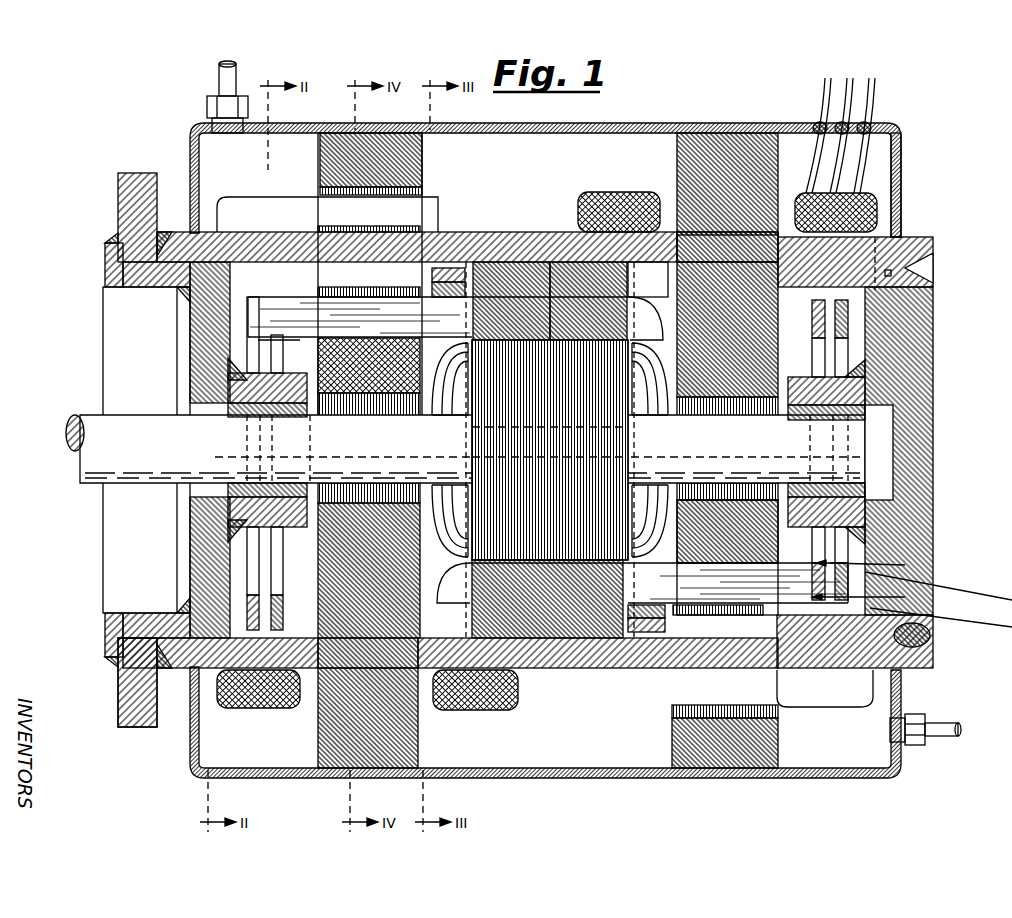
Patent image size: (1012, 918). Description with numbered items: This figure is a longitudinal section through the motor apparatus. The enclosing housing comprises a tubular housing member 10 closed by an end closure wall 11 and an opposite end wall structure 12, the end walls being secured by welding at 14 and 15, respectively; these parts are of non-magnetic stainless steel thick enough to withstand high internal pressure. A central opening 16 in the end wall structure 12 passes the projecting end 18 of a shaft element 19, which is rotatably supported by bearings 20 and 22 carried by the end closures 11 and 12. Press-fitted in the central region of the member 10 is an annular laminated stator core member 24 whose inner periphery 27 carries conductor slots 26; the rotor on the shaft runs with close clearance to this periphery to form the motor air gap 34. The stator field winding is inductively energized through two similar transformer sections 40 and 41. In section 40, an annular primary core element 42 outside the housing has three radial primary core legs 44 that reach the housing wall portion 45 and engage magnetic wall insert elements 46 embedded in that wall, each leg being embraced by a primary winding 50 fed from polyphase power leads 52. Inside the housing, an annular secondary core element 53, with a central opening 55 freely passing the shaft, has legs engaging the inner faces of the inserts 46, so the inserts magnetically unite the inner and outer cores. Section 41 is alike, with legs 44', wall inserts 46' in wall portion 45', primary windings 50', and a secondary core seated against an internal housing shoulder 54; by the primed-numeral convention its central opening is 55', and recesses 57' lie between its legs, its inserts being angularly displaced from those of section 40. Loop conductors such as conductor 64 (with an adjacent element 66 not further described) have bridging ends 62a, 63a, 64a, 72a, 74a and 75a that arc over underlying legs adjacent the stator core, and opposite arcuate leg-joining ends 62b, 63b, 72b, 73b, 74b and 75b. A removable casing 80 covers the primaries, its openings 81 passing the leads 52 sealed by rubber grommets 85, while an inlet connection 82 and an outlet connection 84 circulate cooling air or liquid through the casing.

The tubular housing member 10 is at (915, 238).
The end closure wall 11 is at (935, 296).
The end wall structure 12 is at (195, 592).
The weld 14 is at (935, 270).
The weld 15 is at (152, 667).
The central opening 16 is at (195, 495).
The projecting end of shaft 18 is at (75, 466).
The shaft element 19 is at (860, 442).
The bearing 20 is at (860, 492).
The bearing 22 is at (230, 410).
The motor stator core member 24 is at (512, 262).
The conductor slots 26 is at (541, 262).
The inner periphery 27 is at (634, 567).
The motor air gap 34 is at (548, 566).
The transformer section 40 is at (387, 275).
The transformer section 41 is at (708, 355).
The primary core element 42 is at (338, 134).
The primary core legs 44 is at (378, 690).
The primary core legs 44' is at (711, 218).
The housing wall portion 45 is at (417, 247).
The housing wall portion 45' is at (821, 709).
The wall insert elements 46 is at (450, 686).
The wall inserts 46' is at (742, 215).
The transformer primary winding 50 is at (258, 460).
The primary windings 50' is at (876, 206).
The power leads 52 is at (878, 102).
The secondary core element 53 is at (330, 620).
The internal housing shoulder 54 is at (775, 626).
The central opening 55 is at (367, 393).
The coil 55' is at (727, 508).
The spaces or recesses 57' is at (642, 645).
The bridging end of loop conductor 62a is at (652, 626).
The leg-joining end of loop conductor 62b is at (250, 553).
The bridging end of loop conductor 63a is at (642, 622).
The leg-joining end of loop conductor 63b is at (245, 572).
The loop conductor 64 is at (288, 315).
The bridging end of loop conductor 64a is at (642, 290).
The passage 66 is at (268, 341).
The bridging end of loop conductor 72a is at (470, 682).
The leg-joining end of loop conductor 72b is at (843, 550).
The leg-joining end of loop conductor 73b is at (818, 568).
The bridging end of loop conductor 74a is at (447, 266).
The leg-joining end of loop conductor 74b is at (850, 313).
The bridging end of loop conductor 75a is at (457, 282).
The leg-joining end of loop conductor 75b is at (848, 332).
The cover or casing 80 is at (645, 127).
The openings 81 is at (892, 136).
The inlet connection 82 is at (940, 730).
The outlet connection 84 is at (218, 77).
The rubber grommets 85 is at (815, 128).